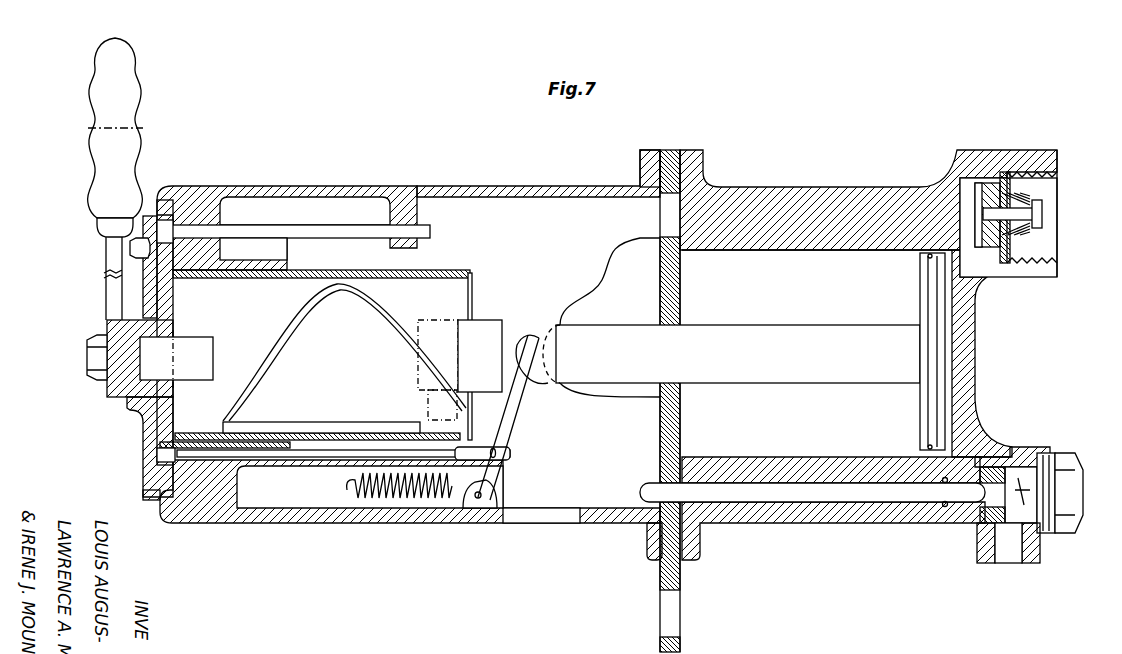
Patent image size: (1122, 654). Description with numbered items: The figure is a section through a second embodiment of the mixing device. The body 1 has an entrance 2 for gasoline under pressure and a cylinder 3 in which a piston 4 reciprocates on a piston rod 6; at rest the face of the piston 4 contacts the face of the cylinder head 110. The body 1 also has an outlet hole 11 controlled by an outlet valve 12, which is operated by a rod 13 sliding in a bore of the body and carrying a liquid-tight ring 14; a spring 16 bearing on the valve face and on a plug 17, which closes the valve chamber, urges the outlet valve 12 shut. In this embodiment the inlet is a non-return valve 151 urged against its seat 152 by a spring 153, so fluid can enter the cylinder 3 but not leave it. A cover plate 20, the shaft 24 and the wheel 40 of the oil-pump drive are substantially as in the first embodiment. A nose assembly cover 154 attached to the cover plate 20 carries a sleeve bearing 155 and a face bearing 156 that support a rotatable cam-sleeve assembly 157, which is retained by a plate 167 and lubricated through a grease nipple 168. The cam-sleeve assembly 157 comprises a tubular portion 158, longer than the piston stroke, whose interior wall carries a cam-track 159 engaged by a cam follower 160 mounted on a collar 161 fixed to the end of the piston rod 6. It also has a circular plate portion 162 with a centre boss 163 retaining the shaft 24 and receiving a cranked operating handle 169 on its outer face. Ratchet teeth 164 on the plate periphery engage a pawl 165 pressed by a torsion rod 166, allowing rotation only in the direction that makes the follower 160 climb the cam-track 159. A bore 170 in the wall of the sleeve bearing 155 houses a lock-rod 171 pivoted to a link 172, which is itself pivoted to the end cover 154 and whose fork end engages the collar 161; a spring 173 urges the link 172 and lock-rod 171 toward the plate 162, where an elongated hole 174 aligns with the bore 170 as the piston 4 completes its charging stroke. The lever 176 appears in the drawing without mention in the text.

The body 1 is at (842, 202).
The entrance 2 is at (1057, 258).
The cylinder 3 is at (806, 252).
The piston 4 is at (945, 315).
The piston rod 6 is at (536, 333).
The outlet hole 11 is at (992, 448).
The outlet valve 12 is at (1002, 470).
The rod 13 is at (790, 504).
The ring 14 is at (942, 506).
The spring 16 is at (1010, 541).
The plug 17 is at (1062, 490).
The cover plate 20 is at (665, 152).
The shaft 24 is at (200, 360).
The wheel 40 is at (632, 222).
The cylinder head 110 is at (975, 374).
The non-return valve 151 is at (990, 185).
The seat 152 is at (1012, 192).
The spring 153 is at (1030, 198).
The nose assembly cover 154 is at (494, 188).
The sleeve bearing 155 is at (296, 260).
The face bearing 156 is at (180, 279).
The cam-sleeve assembly 157 is at (88, 362).
The tubular portion 158 is at (279, 422).
The cam-track 159 is at (378, 305).
The cam follower 160 is at (414, 410).
The collar 161 is at (487, 322).
The circular plate portion 162 is at (155, 268).
The centre boss 163 is at (127, 398).
The ratchet teeth 164 is at (148, 216).
The pawl 165 is at (188, 190).
The torsion rod 166 is at (318, 225).
The plate 167 is at (143, 481).
The grease nipple 168 is at (130, 248).
The cranked operating handle 169 is at (100, 94).
The bore 170 is at (267, 460).
The lock-rod 171 is at (341, 459).
The link 172 is at (503, 478).
The spring 173 is at (424, 500).
The elongated hole 174 is at (157, 456).
The lever 176 is at (534, 448).